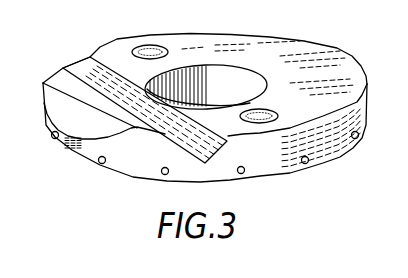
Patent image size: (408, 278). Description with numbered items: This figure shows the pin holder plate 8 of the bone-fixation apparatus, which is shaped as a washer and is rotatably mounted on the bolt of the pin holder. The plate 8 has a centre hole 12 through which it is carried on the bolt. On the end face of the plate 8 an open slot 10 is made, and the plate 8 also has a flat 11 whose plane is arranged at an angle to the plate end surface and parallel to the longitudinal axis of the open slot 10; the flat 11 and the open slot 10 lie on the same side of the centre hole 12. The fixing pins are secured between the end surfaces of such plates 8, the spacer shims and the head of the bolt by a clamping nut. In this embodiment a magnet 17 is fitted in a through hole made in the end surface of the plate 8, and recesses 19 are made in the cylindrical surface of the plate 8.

The plate 8 is at (322, 68).
The open slot 10 is at (83, 67).
The flat 11 is at (58, 107).
The centre hole 12 is at (222, 73).
The magnet 17 is at (149, 45).
The recess 19 is at (305, 165).